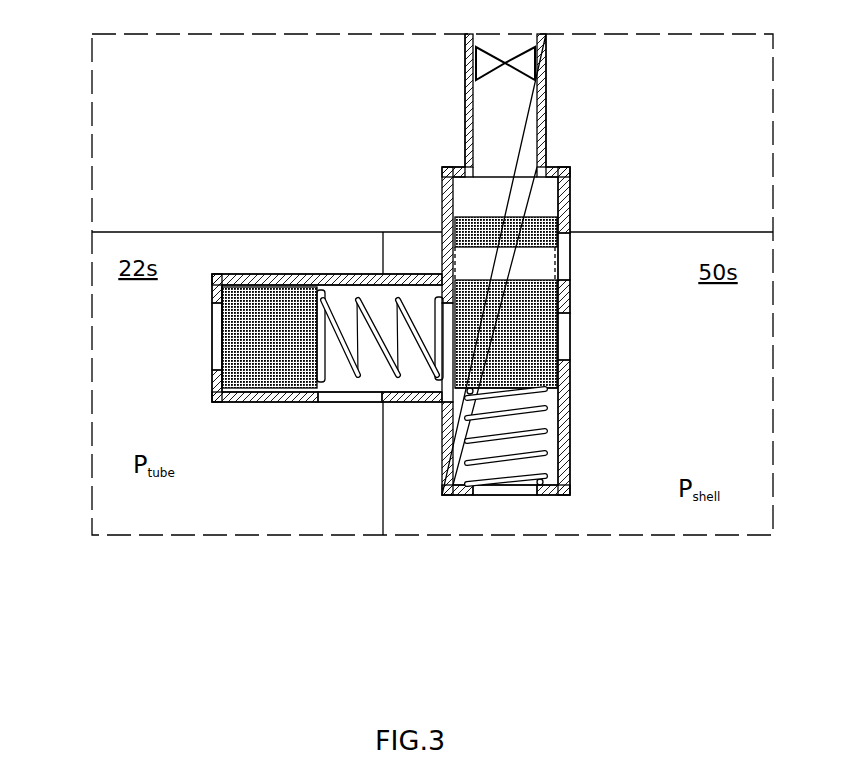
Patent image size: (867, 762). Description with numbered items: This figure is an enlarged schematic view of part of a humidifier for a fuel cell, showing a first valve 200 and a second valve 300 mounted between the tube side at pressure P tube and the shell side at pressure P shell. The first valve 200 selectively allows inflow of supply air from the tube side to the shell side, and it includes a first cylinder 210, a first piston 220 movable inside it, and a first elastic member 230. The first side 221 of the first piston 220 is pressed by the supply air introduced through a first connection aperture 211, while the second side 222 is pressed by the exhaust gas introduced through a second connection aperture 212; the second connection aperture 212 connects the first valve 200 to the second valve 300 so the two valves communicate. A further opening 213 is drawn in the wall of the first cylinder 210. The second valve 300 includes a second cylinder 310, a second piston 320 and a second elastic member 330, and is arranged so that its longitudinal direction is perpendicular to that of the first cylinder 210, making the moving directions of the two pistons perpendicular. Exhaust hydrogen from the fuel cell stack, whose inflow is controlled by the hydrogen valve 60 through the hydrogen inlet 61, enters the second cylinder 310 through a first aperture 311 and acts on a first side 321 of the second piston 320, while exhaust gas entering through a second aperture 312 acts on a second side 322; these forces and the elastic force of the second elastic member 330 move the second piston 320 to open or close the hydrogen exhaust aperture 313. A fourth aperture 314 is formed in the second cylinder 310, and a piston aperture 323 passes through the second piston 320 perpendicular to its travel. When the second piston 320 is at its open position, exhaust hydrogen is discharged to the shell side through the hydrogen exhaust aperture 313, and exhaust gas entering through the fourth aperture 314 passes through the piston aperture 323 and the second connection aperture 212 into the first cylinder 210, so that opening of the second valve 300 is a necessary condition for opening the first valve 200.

The hydrogen valve 60 is at (528, 63).
The hydrogen inlet 61 is at (546, 98).
The first valve 200 is at (170, 502).
The first cylinder 210 is at (247, 400).
The first connection aperture 211 is at (210, 345).
The second connection aperture 212 is at (443, 350).
The third opening of tube housing 213 is at (345, 398).
The first piston 220 is at (267, 300).
The first side of the first piston 221 is at (200, 305).
The second side of the first piston 222 is at (328, 300).
The first elastic member 230 is at (365, 293).
The second valve 300 is at (623, 112).
The second cylinder 310 is at (570, 440).
The first aperture 311 is at (488, 177).
The second aperture 312 is at (503, 496).
The hydrogen exhaust aperture 313 is at (570, 260).
The fourth aperture 314 is at (570, 333).
The second piston 320 is at (558, 358).
The first side of the second piston 321 is at (515, 217).
The second side of the second piston 322 is at (557, 405).
The piston aperture 323 is at (532, 253).
The second elastic member 330 is at (468, 458).